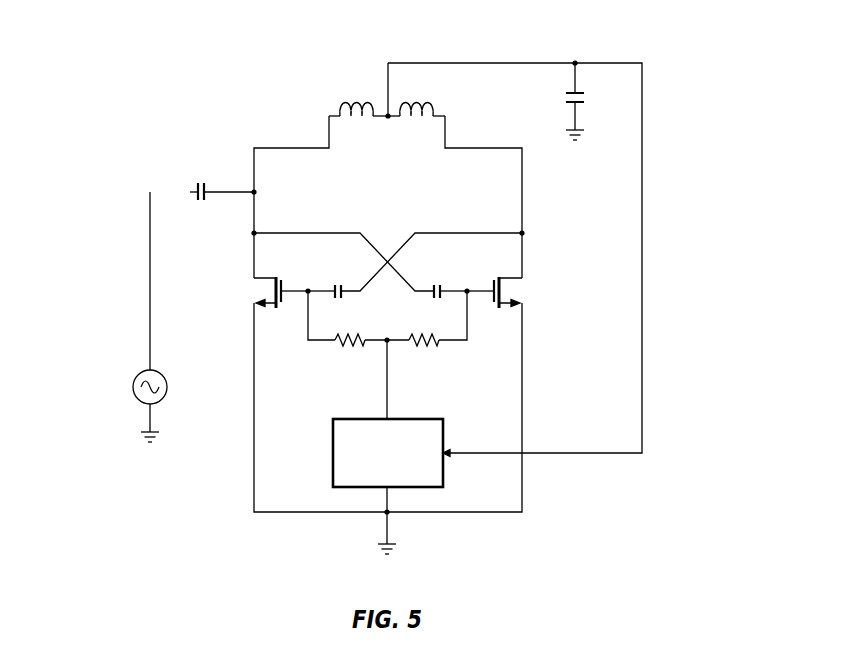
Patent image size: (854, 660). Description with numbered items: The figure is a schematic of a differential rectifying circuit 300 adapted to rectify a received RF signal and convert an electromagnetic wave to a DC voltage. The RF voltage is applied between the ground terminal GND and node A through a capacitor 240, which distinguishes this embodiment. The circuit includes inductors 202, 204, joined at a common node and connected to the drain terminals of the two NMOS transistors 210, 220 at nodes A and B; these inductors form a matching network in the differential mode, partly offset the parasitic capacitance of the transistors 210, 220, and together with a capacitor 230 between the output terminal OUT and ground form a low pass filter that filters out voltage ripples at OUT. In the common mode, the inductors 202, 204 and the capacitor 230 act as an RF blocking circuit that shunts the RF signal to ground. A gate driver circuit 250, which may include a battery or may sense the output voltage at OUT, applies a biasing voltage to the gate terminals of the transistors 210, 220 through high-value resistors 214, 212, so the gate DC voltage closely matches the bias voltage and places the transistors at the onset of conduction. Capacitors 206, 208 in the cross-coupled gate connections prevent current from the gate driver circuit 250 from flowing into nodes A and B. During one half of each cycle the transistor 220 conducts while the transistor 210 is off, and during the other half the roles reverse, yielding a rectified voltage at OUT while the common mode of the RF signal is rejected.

The differential rectifying circuit 300 is at (90, 121).
The inductor 202 is at (350, 107).
The inductor 204 is at (420, 103).
The capacitor 230 is at (568, 97).
The capacitor 240 is at (202, 183).
The NMOS transistor 210 is at (263, 292).
The NMOS transistor 220 is at (508, 292).
The capacitor 206 is at (337, 282).
The capacitor 208 is at (437, 282).
The resistor 214 is at (352, 348).
The resistor 212 is at (423, 348).
The gate driver circuit 250 is at (362, 419).